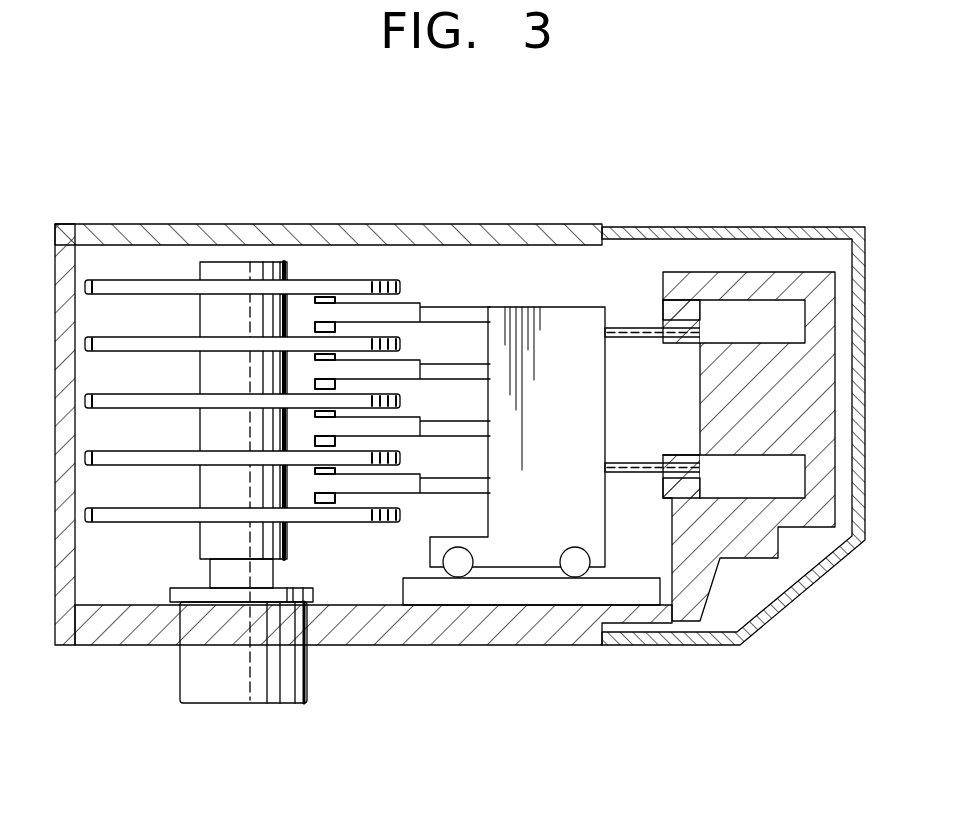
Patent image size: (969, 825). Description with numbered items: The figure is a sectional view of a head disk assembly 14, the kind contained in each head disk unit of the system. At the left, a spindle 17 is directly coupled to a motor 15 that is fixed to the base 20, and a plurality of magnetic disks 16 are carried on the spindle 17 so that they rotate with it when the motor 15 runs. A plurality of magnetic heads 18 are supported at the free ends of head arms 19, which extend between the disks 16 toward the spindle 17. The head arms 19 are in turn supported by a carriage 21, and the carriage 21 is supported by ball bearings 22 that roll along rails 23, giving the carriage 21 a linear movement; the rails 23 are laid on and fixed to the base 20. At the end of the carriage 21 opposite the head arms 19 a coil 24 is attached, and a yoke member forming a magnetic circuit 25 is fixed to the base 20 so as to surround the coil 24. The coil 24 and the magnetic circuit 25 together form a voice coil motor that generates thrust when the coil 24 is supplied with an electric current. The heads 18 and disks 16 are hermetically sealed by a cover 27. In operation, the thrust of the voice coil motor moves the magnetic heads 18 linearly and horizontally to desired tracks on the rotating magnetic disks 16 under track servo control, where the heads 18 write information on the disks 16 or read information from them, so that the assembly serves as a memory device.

The head disk assembly 14 is at (152, 182).
The motor 15 is at (245, 700).
The magnetic disks 16 is at (117, 526).
The spindle 17 is at (235, 266).
The magnetic heads 18 is at (327, 296).
The head arms 19 is at (443, 305).
The base 20 is at (447, 645).
The carriage 21 is at (538, 306).
The ball bearings 22 is at (560, 573).
The rails 23 is at (647, 595).
The coil 24 is at (625, 327).
The magnetic circuit 25 is at (746, 274).
The cover 27 is at (822, 228).